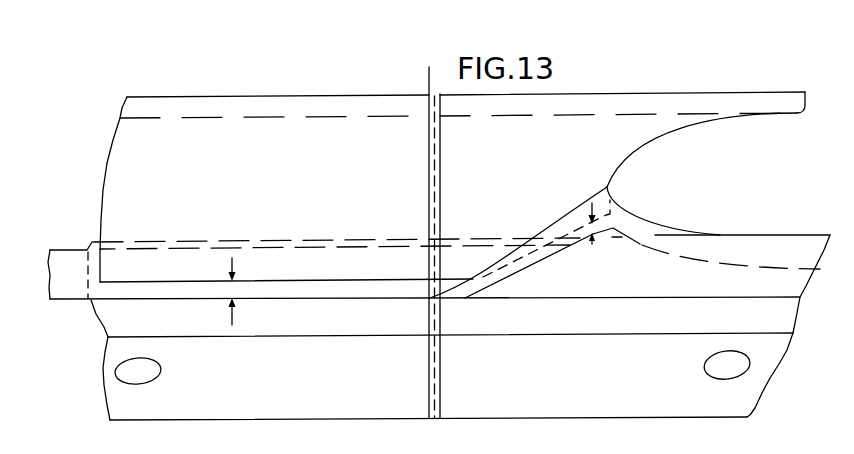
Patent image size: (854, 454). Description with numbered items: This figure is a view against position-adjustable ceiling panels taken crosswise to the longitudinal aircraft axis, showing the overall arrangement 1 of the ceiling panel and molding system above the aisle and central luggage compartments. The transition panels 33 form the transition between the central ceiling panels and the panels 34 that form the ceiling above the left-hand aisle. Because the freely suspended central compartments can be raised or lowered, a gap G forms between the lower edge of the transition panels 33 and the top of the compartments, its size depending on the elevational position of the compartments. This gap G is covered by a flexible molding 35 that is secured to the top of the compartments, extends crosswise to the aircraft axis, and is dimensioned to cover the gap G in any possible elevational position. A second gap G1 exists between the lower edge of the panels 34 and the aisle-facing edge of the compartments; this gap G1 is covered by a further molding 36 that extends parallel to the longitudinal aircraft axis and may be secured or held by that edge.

The strap assembly 1 is at (264, 68).
The transition panels 33 is at (553, 198).
The panels 34 is at (327, 192).
The flexible molding 35 is at (625, 213).
The molding 36 is at (72, 256).
The gap G is at (598, 237).
The gap G1 is at (232, 291).